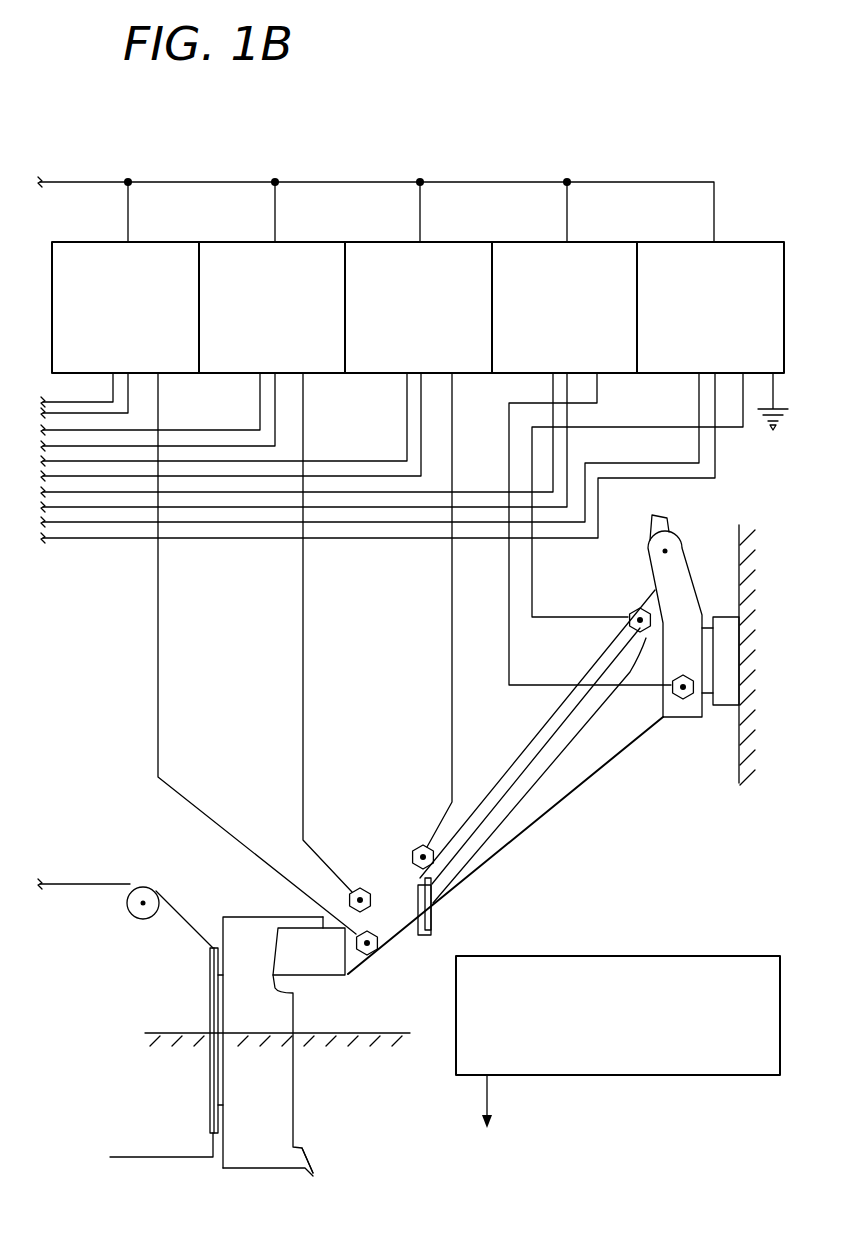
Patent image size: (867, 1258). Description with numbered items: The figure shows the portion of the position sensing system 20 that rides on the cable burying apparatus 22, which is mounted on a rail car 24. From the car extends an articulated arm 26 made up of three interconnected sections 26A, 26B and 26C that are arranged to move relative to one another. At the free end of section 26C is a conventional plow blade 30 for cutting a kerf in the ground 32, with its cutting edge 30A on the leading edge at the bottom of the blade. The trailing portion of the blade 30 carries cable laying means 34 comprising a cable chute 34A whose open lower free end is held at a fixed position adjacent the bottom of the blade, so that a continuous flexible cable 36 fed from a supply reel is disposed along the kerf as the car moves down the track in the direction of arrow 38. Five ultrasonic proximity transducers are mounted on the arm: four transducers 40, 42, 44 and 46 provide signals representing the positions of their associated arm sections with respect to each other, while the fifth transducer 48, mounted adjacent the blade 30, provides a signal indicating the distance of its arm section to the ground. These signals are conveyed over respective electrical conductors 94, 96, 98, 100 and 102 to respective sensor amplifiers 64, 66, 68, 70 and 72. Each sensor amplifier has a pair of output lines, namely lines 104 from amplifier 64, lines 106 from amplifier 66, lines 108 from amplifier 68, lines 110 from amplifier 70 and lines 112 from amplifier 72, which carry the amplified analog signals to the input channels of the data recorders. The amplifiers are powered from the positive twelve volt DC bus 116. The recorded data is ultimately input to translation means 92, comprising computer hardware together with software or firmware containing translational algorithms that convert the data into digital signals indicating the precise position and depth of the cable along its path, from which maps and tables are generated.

The position sensing system 20 is at (92, 668).
The (+)12 VDC bus 116 is at (327, 182).
The sensor amplifier 72 is at (107, 354).
The sensor amplifier 70 is at (254, 354).
The sensor amplifier 68 is at (400, 354).
The sensor amplifier 66 is at (546, 354).
The sensor amplifier 64 is at (692, 354).
The output lines 112 is at (127, 393).
The output lines 110 is at (274, 413).
The output lines 108 is at (421, 425).
The output lines 106 is at (567, 447).
The output lines 104 is at (700, 453).
The electrical conductor 102 is at (158, 745).
The electrical conductor 100 is at (303, 755).
The electrical conductor 98 is at (452, 760).
The electrical conductor 94 is at (553, 617).
The electrical conductor 96 is at (515, 685).
The rail car 24 is at (739, 738).
The arm section 26A is at (683, 560).
The apparatus for burying elongated cable 22 is at (609, 760).
The articulated arm 26 is at (484, 845).
The arm section 26B is at (418, 932).
The arm section 26C is at (302, 961).
The proximity transducer 40 is at (628, 628).
The proximity transducer 42 is at (683, 700).
The proximity transducer 44 is at (423, 845).
The proximity transducer 46 is at (357, 888).
The proximity transducer 48 is at (380, 944).
The plow blade 30 is at (266, 1095).
The cutting edge 30A is at (305, 1158).
The ground 32 is at (362, 1062).
The cable laying means 34 is at (210, 1062).
The cable chute 34A is at (213, 1140).
The flexible cable 36 is at (146, 1152).
The arrow indicating direction of travel 38 is at (422, 1117).
The translation means 92 is at (635, 1068).